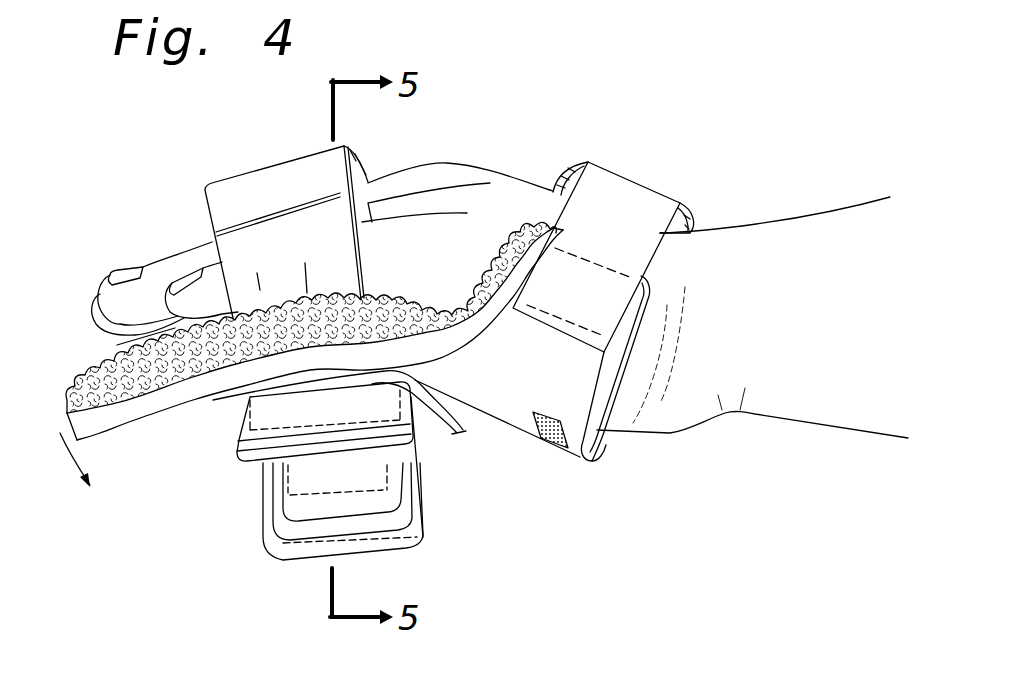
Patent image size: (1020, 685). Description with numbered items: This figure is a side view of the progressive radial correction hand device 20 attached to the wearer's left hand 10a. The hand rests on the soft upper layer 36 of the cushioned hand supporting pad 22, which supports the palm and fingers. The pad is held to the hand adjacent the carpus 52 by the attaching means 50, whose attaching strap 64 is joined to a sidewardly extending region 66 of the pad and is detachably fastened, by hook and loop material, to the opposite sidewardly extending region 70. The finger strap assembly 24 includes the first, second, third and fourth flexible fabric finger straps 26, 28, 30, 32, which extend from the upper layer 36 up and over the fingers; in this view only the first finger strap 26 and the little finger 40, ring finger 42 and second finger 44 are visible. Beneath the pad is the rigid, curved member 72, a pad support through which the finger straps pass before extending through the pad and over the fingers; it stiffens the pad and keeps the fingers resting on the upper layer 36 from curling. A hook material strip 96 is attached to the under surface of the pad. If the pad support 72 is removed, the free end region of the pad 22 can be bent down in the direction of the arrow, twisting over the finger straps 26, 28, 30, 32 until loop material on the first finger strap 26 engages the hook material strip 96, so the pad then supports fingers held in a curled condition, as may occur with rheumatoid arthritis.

The hand 10a is at (470, 163).
The radial correction hand device 20 is at (250, 508).
The hand supporting pad 22 is at (592, 476).
The finger strap assembly 24 is at (233, 453).
The first finger strap 26 is at (258, 237).
The second finger strap 28 is at (310, 530).
The third finger strap 30 is at (276, 541).
The fourth finger strap 32 is at (283, 550).
The upper layer 36 is at (63, 400).
The fourth (little) finger 40 is at (113, 347).
The third (ring) finger 42 is at (165, 261).
The second finger 44 is at (97, 320).
The attaching means 50 is at (638, 170).
The carpus 52 is at (670, 433).
The attaching strap 64 is at (660, 252).
The sidewardly extending region 66 is at (620, 350).
The opposite sidewardly extending region 70 is at (692, 220).
The rigid, curved member 72 is at (465, 435).
The hook material strip 96 is at (555, 444).